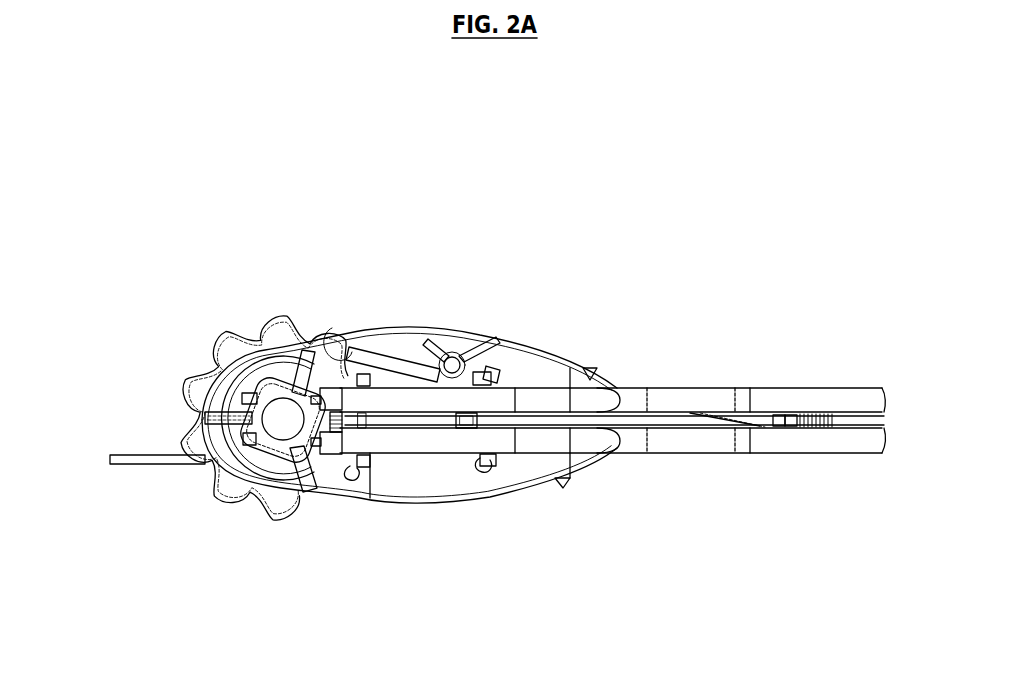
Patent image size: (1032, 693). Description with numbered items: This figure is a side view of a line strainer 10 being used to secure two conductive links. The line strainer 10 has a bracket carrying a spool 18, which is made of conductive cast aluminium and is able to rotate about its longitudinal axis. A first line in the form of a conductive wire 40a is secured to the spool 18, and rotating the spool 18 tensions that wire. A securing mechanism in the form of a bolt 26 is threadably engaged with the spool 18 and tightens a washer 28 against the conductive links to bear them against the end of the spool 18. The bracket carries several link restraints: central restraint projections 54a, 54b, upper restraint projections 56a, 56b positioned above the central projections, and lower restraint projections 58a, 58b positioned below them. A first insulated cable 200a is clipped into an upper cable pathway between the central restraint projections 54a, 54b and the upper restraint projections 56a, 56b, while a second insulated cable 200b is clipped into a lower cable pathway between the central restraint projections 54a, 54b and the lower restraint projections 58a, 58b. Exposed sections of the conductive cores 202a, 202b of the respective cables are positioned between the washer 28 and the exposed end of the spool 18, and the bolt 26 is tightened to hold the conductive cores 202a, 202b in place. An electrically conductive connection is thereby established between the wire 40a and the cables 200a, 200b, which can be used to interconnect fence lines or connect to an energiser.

The line strainer 10 is at (155, 226).
The spool 18 is at (152, 413).
The bolt 26 is at (266, 373).
The washer 28 is at (279, 456).
The conductive wire 40a is at (138, 466).
The central restraint projection 54a is at (352, 437).
The central restraint projection 54b is at (468, 430).
The upper restraint projection 56a is at (371, 383).
The upper restraint projection 56b is at (487, 370).
The lower restraint projection 58a is at (357, 469).
The lower restraint projection 58b is at (487, 463).
The first insulated cable 200a is at (797, 388).
The second insulated cable 200b is at (768, 453).
The conductive core 202a is at (247, 398).
The conductive core 202b is at (250, 440).